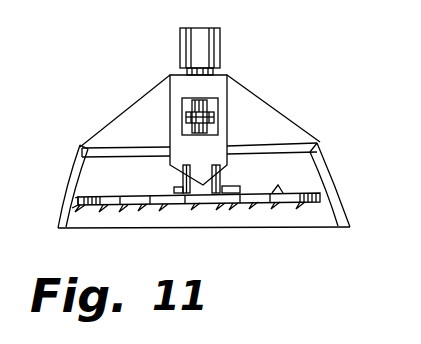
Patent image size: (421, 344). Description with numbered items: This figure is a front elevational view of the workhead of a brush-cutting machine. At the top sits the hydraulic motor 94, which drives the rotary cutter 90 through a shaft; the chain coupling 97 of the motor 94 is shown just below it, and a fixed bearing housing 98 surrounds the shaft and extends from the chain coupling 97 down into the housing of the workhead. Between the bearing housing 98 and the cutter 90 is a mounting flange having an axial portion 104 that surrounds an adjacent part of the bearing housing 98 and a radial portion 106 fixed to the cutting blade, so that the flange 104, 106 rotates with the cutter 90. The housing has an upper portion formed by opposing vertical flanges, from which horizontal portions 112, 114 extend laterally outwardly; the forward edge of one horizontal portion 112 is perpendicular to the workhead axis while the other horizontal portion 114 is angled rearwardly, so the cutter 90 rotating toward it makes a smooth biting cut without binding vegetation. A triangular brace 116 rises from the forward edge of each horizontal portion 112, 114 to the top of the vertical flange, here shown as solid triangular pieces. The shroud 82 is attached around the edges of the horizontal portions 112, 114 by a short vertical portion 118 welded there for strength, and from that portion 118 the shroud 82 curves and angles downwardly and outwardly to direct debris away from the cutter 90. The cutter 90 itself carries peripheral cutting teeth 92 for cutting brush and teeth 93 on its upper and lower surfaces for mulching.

The hydraulic motor 94 is at (213, 47).
The chain coupling 97 is at (218, 117).
The triangular brace 116 is at (158, 134).
The horizontal portion 114 is at (102, 147).
The horizontal portion 112 is at (270, 142).
The short vertical portion 118 is at (330, 150).
The shroud 82 is at (343, 188).
The peripheral cutting teeth 92 is at (326, 228).
The teeth 93 is at (122, 195).
The axial portion 104 is at (214, 192).
The radial portion 106 is at (277, 189).
The rotary cutter 90 is at (92, 205).
The bearing housing 98 is at (218, 178).